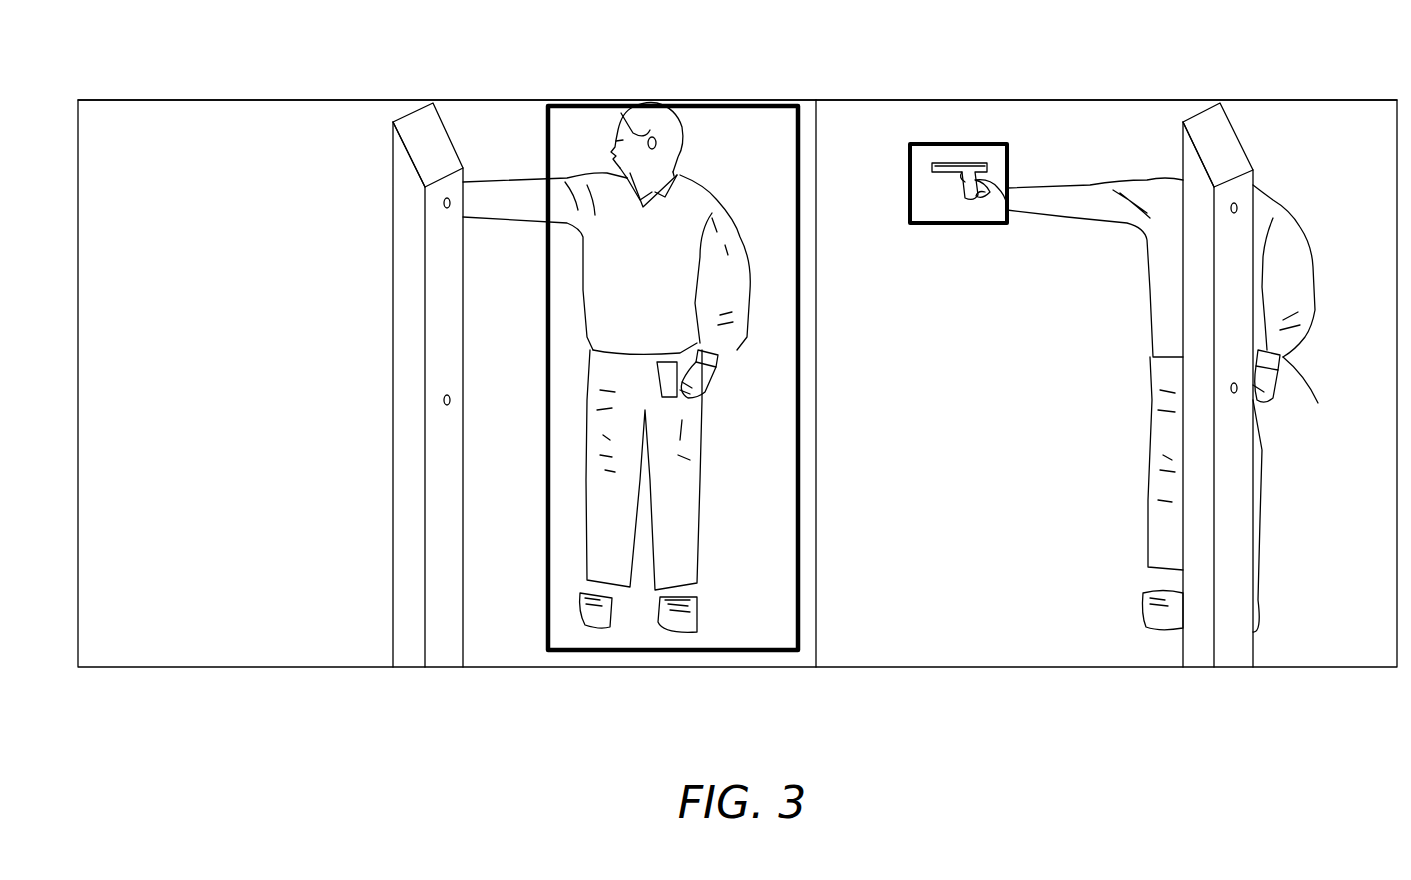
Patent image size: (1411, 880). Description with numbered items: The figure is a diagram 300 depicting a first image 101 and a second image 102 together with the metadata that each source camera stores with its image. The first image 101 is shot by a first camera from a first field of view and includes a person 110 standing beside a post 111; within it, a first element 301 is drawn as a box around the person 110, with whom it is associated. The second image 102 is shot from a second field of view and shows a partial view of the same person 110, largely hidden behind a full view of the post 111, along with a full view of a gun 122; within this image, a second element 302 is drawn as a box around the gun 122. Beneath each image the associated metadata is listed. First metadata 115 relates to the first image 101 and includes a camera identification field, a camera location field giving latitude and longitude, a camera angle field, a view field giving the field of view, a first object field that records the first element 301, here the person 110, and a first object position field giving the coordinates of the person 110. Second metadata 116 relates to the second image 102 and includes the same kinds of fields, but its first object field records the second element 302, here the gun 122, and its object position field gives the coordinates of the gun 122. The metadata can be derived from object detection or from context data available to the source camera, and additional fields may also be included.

The multi-camera detection scene 300 is at (155, 31).
The first image 101 is at (527, 100).
The second image 102 is at (1048, 100).
The post 111 is at (393, 223).
The person 110 is at (718, 360).
The first element 301 is at (630, 652).
The second element 302 is at (982, 225).
The gun 122 is at (930, 223).
The first metadata 115 is at (237, 494).
The second metadata 116 is at (947, 494).